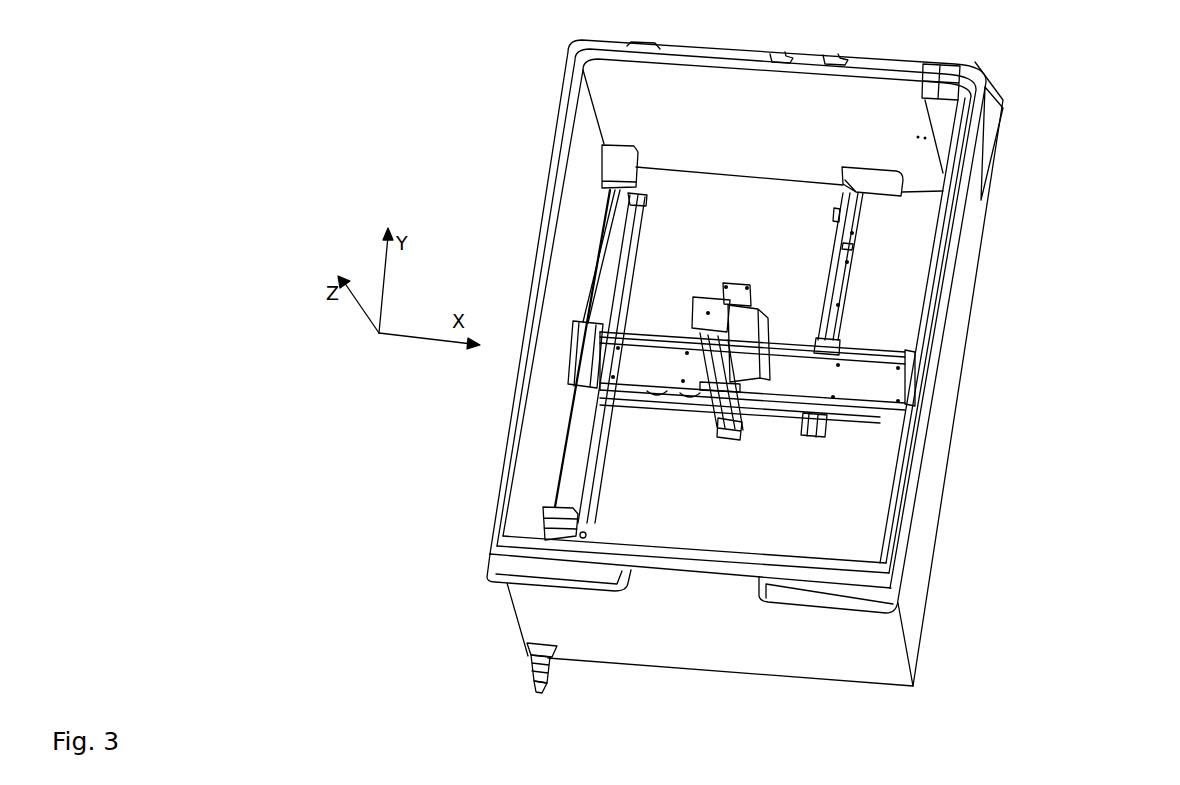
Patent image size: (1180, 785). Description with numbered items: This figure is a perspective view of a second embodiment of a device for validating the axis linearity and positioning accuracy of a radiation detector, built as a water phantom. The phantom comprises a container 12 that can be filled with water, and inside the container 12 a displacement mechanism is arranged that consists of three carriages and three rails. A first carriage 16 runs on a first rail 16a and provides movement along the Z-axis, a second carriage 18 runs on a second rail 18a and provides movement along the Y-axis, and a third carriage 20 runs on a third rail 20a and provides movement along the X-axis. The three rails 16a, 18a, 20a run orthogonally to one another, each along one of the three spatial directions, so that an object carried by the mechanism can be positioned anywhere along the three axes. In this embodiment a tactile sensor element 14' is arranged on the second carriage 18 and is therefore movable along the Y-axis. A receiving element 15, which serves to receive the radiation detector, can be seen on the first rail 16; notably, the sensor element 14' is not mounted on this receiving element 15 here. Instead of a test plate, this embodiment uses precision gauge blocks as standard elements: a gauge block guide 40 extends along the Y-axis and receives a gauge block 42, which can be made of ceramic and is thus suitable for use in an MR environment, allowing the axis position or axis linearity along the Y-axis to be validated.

The container 12 is at (983, 208).
The tactile sensor element 14' is at (844, 387).
The receiving element 15 is at (700, 400).
The first carriage 16 is at (700, 392).
The first rail 16a is at (762, 392).
The second carriage 18 is at (643, 360).
The second rail 18a is at (605, 220).
The third carriage 20 is at (752, 341).
The third rail 20a is at (905, 368).
The gauge block guide 40 is at (877, 186).
The gauge block 42 is at (858, 248).